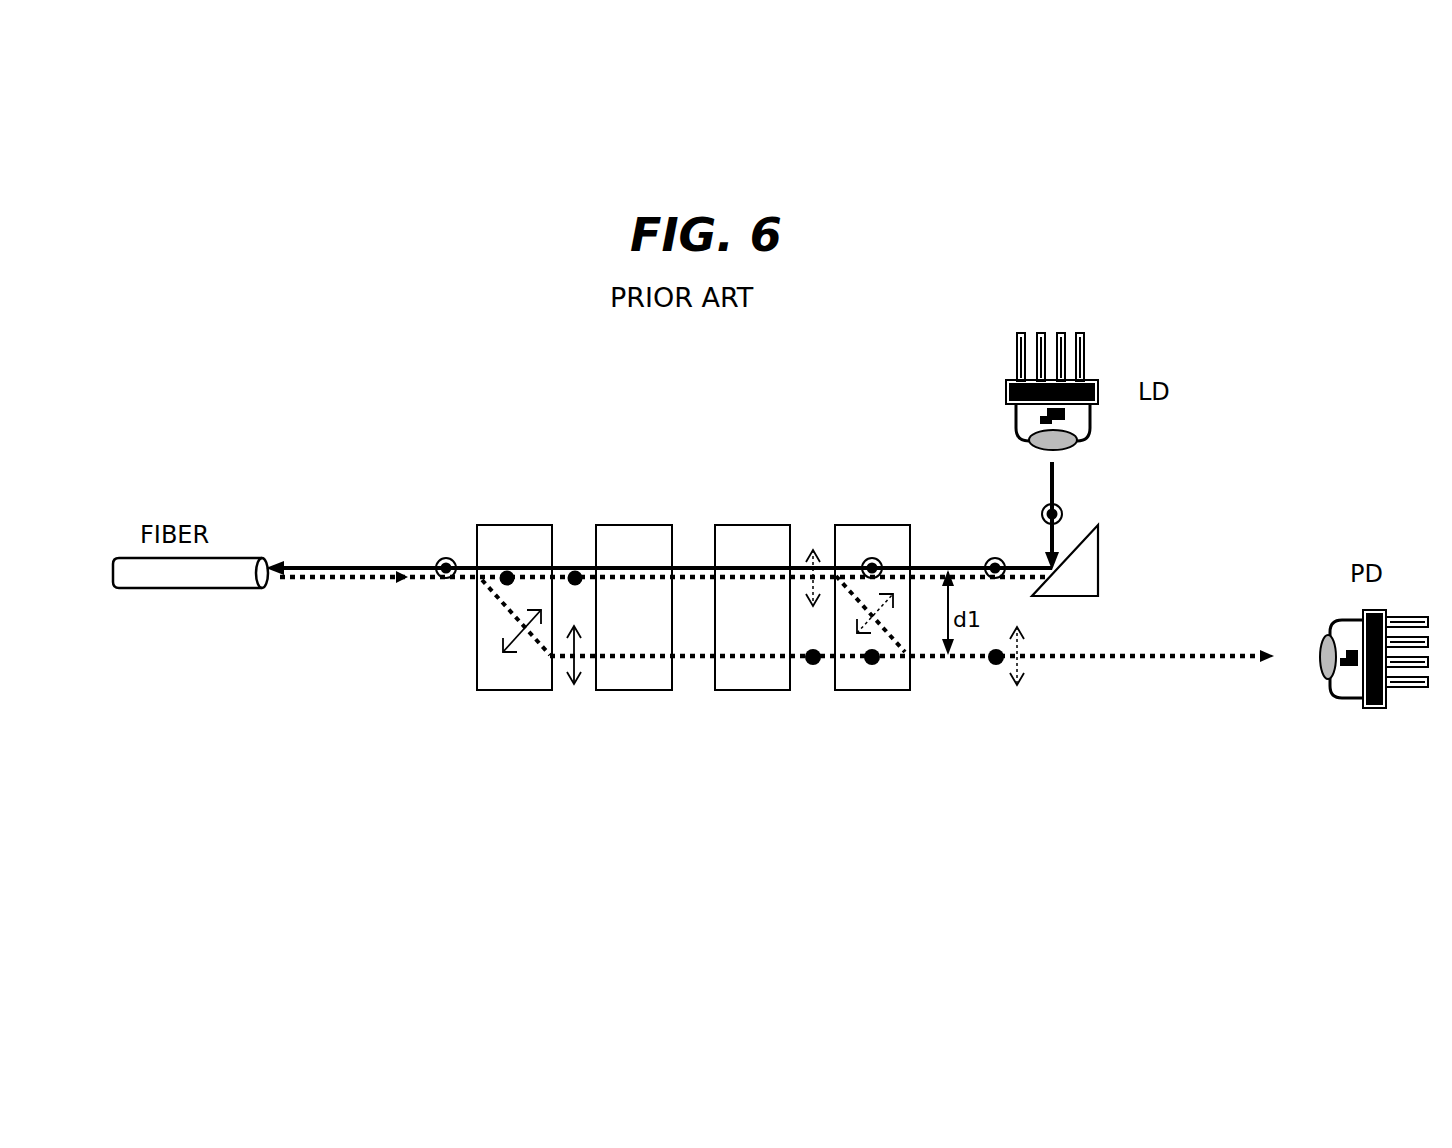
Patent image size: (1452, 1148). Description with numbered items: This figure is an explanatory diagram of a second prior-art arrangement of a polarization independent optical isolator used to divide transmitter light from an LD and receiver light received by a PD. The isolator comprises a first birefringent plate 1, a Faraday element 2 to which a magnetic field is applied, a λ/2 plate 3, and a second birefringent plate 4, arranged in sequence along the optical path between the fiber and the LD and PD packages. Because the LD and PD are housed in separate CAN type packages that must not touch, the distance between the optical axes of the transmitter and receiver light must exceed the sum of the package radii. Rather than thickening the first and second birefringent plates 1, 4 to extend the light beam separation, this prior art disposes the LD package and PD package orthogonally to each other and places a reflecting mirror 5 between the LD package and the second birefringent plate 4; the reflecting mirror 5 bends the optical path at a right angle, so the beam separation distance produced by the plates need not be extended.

The first birefringent plate 1 is at (514, 607).
The Faraday element 2 is at (634, 607).
The λ/2 plate 3 is at (752, 607).
The second birefringent plate 4 is at (872, 607).
The reflecting mirror 5 is at (1140, 574).